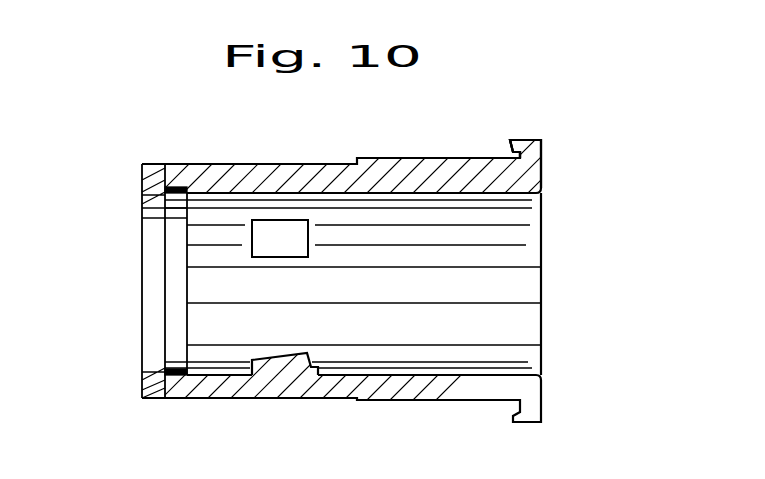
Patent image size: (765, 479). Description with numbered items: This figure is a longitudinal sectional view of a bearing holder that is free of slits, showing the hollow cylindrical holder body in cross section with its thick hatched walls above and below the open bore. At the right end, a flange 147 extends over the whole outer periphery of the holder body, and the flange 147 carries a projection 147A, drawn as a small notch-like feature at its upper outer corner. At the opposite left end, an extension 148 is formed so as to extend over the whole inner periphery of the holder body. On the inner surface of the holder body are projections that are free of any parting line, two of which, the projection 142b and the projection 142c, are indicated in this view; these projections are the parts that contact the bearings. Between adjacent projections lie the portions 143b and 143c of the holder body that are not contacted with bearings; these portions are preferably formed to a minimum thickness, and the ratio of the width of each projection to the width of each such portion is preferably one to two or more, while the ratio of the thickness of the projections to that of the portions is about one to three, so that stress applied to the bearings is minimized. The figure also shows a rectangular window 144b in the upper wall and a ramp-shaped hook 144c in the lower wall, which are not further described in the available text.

The projection 142b is at (508, 327).
The projection 142c is at (190, 213).
The portion of the holder body not contacted with bearings 143b is at (508, 234).
The portion of the holder body not contacted with bearings 143c is at (433, 388).
The window / opening 144b is at (285, 240).
The engaging projection 144c is at (280, 355).
The flange 147 is at (543, 140).
The projection 147A is at (508, 140).
The extension 148 is at (143, 398).